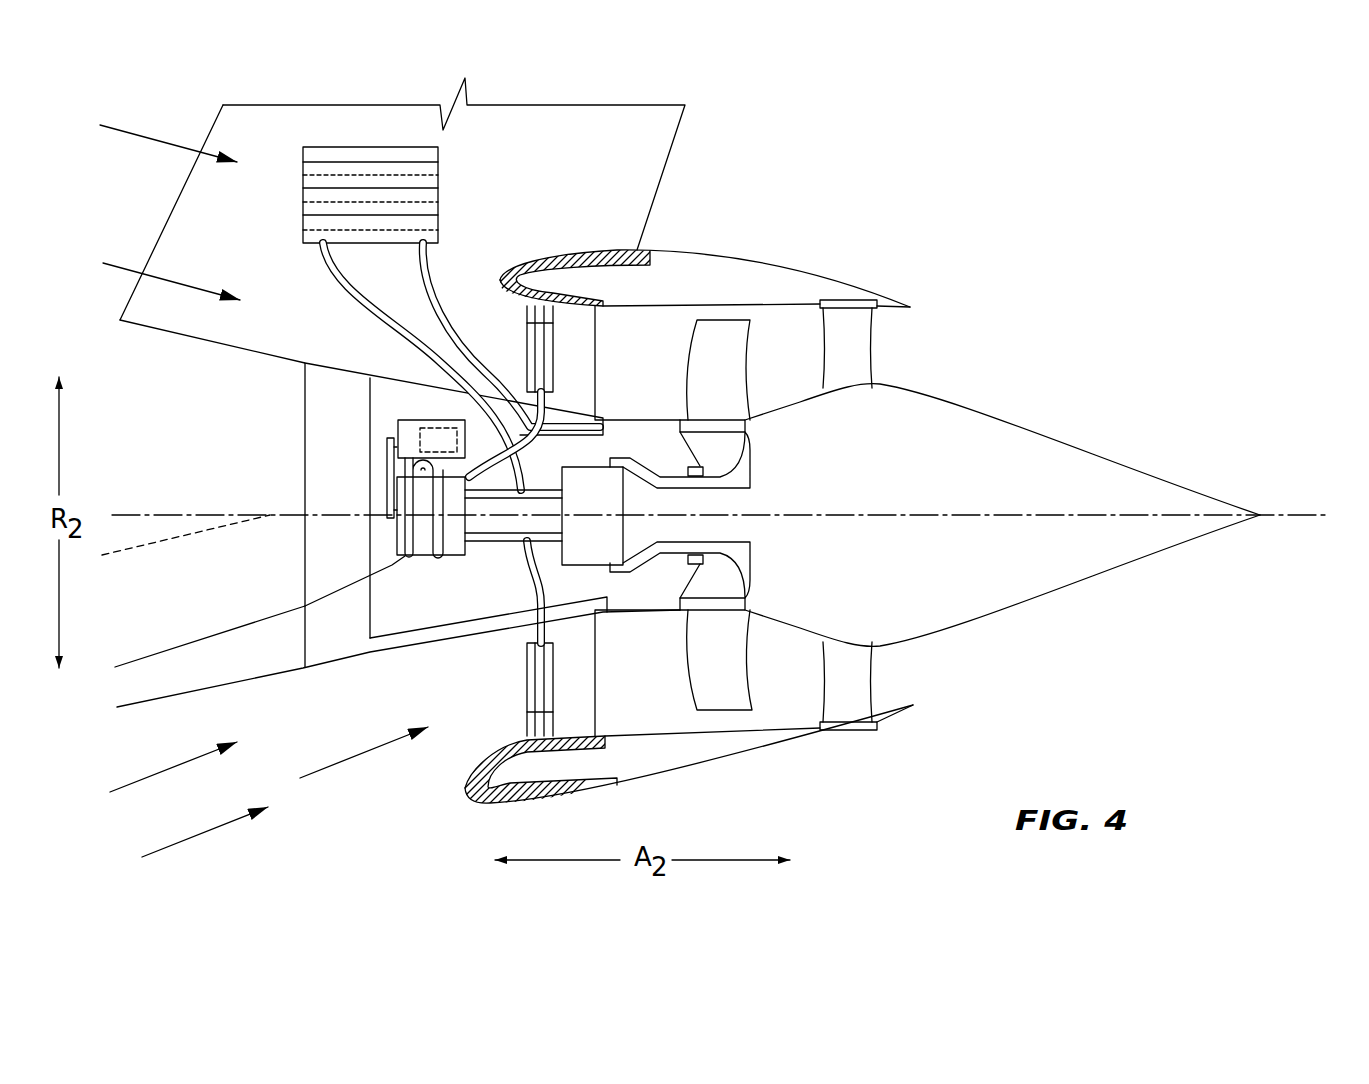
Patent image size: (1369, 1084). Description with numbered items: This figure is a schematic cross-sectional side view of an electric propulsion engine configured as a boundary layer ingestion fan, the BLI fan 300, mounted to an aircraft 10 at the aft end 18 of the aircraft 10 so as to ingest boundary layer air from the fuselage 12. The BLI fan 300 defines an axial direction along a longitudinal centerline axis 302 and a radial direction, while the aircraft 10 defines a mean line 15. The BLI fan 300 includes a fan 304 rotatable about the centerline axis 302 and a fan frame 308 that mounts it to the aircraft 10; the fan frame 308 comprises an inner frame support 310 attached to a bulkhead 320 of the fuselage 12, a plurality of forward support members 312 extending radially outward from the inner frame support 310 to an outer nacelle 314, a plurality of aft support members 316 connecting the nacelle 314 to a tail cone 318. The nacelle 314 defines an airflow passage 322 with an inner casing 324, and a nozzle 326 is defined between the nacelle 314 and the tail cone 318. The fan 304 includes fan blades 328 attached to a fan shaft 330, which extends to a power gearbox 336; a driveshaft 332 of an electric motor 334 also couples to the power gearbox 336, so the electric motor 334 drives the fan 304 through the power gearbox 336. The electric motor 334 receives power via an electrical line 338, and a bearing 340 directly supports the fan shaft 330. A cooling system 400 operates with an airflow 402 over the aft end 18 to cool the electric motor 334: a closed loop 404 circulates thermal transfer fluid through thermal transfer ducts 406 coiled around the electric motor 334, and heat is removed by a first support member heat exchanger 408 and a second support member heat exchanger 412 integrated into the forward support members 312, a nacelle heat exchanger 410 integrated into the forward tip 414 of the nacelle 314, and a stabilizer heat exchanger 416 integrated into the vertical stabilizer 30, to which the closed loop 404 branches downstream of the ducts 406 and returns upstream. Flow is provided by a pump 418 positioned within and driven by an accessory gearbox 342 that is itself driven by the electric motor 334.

The aircraft 10 is at (845, 165).
The fuselage 12 is at (173, 697).
The mean line 15 is at (140, 552).
The aft end 18 is at (393, 817).
The vertical stabilizer 30 is at (663, 132).
The BLI fan 300 is at (965, 183).
The centerline axis 302 is at (1290, 513).
The fan 304 is at (777, 340).
The fan frame 308 is at (497, 348).
The inner frame support 310 is at (451, 392).
The forward support members 312 is at (550, 293).
The outer nacelle 314 is at (622, 250).
The aft support members 316 is at (852, 320).
The tail cone 318 is at (1130, 467).
The bulkhead 320 is at (305, 428).
The airflow passage 322 is at (640, 342).
The inner casing 324 is at (677, 396).
The nozzle 326 is at (903, 345).
The fan blades 328 is at (725, 697).
The fan shaft 330 is at (720, 482).
The driveshaft 332 is at (514, 545).
The electric motor 334 is at (403, 556).
The power gearbox 336 is at (613, 530).
The electrical line 338 is at (228, 633).
The bearing 340 is at (702, 462).
The accessory gearbox 342 is at (412, 420).
The cooling system 400 is at (433, 612).
The airflow 402 is at (160, 142).
The closed loop 404 is at (437, 557).
The thermal transfer ducts 406 is at (403, 538).
The first support member heat exchanger 408 is at (555, 365).
The nacelle heat exchanger 410 is at (565, 252).
The second support member heat exchanger 412 is at (552, 680).
The forward tip 414 is at (492, 258).
The stabilizer heat exchanger 416 is at (438, 162).
The pump 418 is at (420, 443).